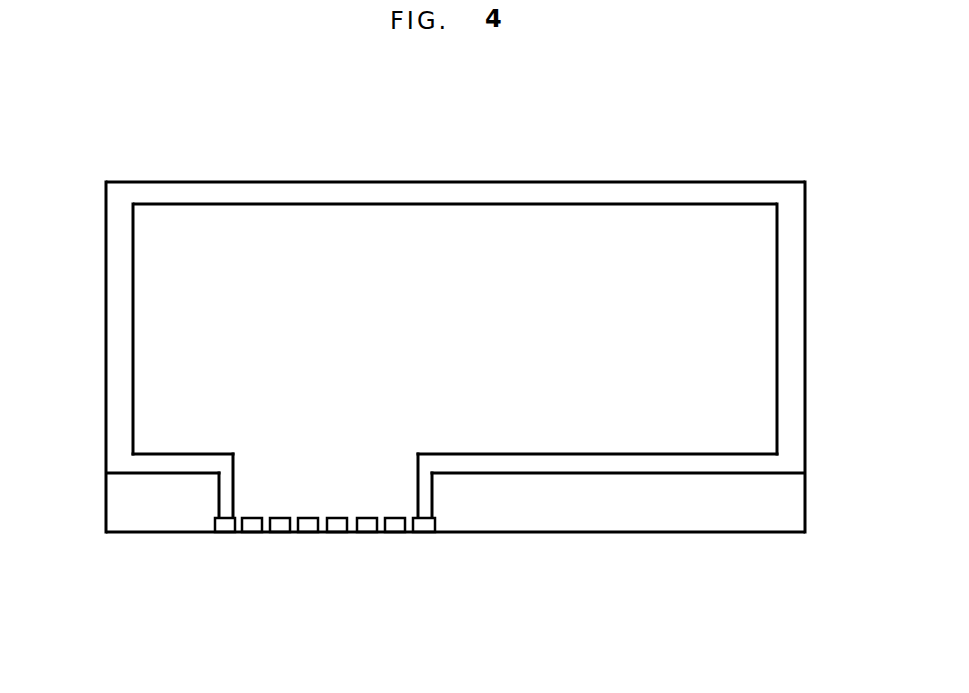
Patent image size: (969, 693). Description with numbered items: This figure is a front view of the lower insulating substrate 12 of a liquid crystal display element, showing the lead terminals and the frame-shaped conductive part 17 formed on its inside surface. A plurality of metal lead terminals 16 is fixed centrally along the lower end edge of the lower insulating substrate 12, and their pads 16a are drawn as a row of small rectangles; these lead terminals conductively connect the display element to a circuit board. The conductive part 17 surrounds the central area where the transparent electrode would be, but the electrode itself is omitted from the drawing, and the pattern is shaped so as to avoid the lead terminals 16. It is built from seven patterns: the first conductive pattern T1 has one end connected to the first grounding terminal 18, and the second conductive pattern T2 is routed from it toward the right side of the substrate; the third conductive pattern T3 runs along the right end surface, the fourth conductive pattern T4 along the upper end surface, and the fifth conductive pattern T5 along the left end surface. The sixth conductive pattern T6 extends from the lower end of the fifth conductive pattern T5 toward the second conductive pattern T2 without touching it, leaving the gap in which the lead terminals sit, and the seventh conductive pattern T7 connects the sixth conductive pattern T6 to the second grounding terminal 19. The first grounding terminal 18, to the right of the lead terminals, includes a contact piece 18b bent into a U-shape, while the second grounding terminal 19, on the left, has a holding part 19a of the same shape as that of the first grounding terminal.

The lower insulating substrate 12 is at (609, 172).
The conductive part 17 is at (453, 317).
The first conductive pattern T1 is at (424, 480).
The second conductive pattern T2 is at (612, 468).
The third conductive pattern T3 is at (793, 252).
The fourth conductive pattern T4 is at (337, 195).
The fifth conductive pattern T5 is at (117, 302).
The sixth conductive pattern T6 is at (177, 465).
The seventh conductive pattern T7 is at (227, 483).
The holding part 19a is at (223, 528).
The second grounding terminal 19 is at (203, 566).
The lead terminal pad 16a is at (282, 528).
The lead terminal 16 is at (333, 593).
The contact piece 18b is at (422, 528).
The first grounding terminal 18 is at (448, 568).